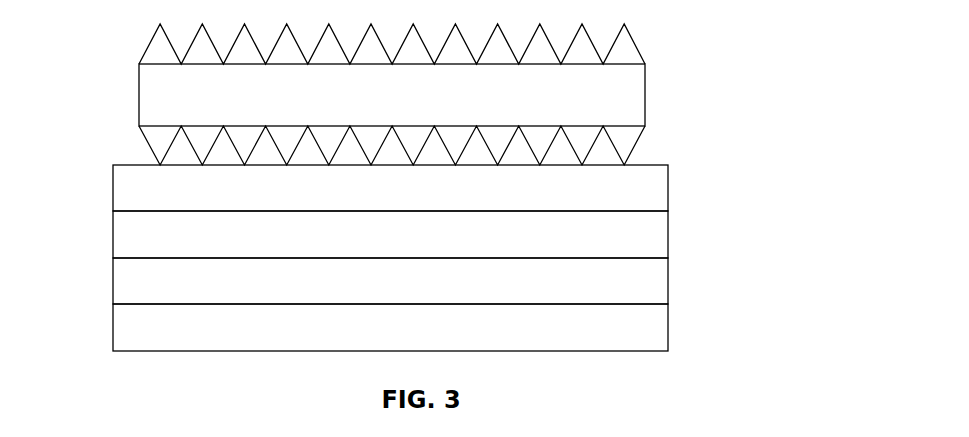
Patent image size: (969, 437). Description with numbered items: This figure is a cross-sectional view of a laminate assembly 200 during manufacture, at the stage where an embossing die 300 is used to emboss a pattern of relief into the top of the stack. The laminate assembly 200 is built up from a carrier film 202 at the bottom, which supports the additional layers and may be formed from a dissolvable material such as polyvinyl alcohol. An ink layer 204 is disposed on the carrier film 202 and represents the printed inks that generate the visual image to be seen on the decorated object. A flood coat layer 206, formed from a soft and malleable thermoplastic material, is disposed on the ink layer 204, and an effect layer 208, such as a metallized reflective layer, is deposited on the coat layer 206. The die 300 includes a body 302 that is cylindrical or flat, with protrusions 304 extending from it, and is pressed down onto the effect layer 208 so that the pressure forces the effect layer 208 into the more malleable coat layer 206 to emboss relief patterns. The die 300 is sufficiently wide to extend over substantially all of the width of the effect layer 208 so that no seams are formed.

The embossing die 300 is at (77, 23).
The body 302 is at (633, 96).
The protrusions 304 is at (625, 138).
The laminate assembly 200 is at (773, 165).
The effect layer 208 is at (662, 188).
The flood coat layer 206 is at (662, 235).
The ink layer 204 is at (662, 282).
The carrier film 202 is at (662, 328).